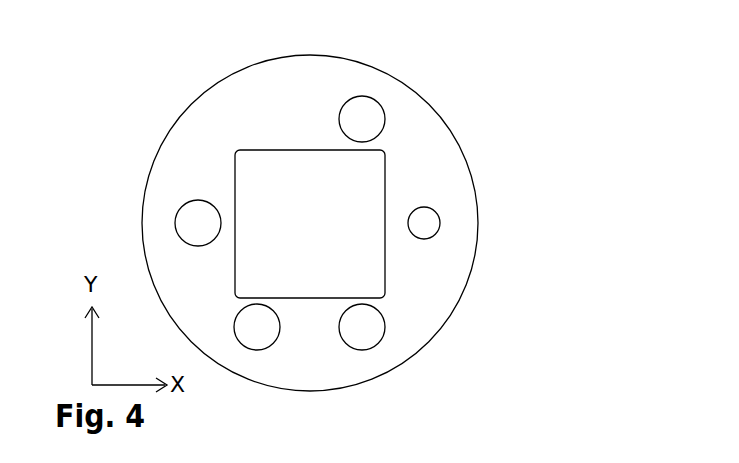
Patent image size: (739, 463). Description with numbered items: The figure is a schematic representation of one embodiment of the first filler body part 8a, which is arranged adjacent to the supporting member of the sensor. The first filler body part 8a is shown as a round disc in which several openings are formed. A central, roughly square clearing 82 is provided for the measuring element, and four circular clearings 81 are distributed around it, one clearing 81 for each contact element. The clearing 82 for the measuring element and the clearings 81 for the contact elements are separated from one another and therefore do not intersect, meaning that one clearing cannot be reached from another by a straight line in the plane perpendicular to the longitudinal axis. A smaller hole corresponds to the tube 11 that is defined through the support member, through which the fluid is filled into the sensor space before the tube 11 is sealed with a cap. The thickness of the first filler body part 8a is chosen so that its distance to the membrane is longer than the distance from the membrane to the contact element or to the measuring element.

The first filler body part 8a is at (460, 237).
The clearing 81 is at (193, 200).
The clearing 82 is at (318, 272).
The tube 11 is at (424, 222).